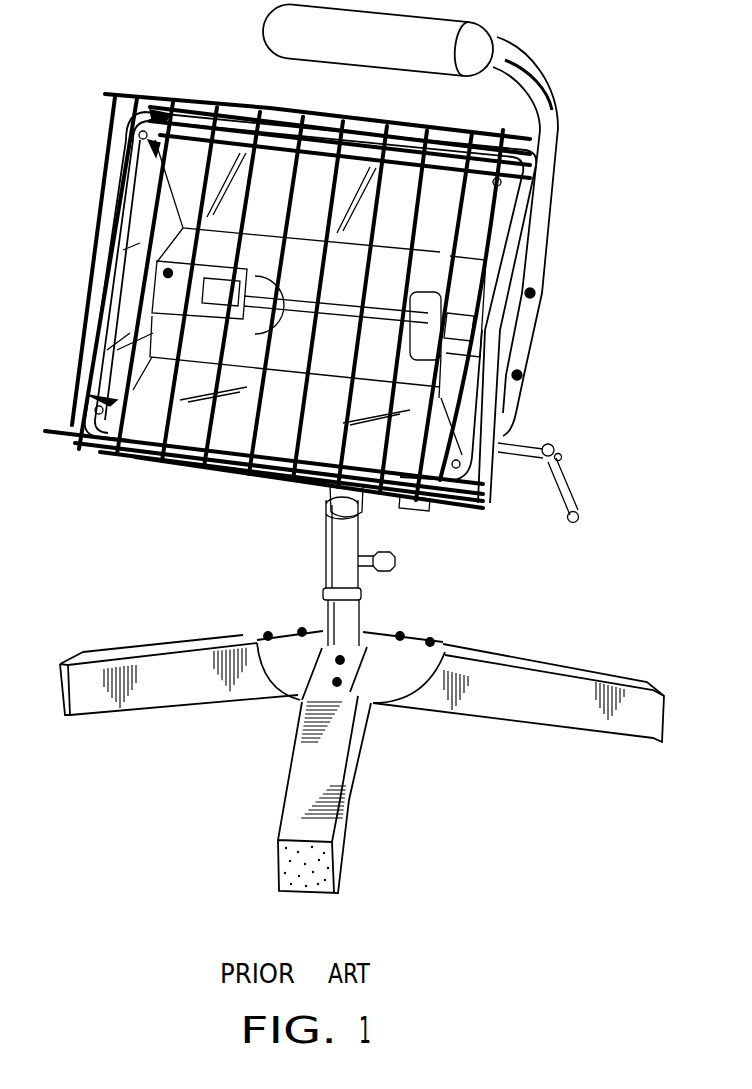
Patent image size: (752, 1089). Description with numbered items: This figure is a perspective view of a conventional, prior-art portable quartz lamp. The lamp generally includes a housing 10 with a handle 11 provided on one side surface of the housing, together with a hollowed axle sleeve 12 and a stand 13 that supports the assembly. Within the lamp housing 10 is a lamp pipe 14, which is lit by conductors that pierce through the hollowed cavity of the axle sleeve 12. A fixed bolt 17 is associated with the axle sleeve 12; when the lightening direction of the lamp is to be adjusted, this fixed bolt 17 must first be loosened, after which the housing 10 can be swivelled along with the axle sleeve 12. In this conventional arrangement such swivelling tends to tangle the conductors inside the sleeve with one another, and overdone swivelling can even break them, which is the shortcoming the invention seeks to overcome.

The housing 10 is at (488, 404).
The handle 11 is at (548, 112).
The hollowed axle sleeve 12 is at (333, 551).
The stand 13 is at (500, 705).
The lamp pipe 14 is at (380, 304).
The fixed bolt 17 is at (397, 558).